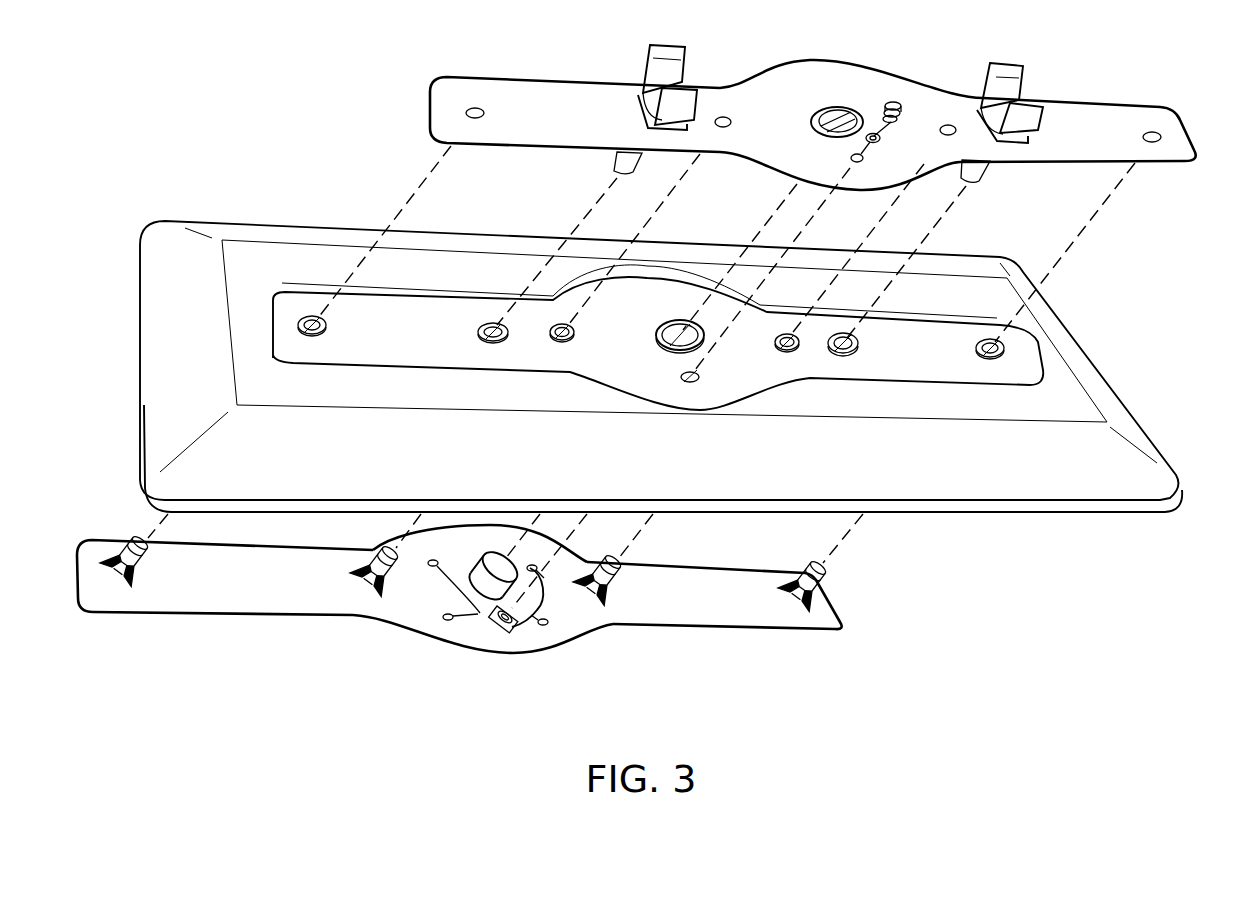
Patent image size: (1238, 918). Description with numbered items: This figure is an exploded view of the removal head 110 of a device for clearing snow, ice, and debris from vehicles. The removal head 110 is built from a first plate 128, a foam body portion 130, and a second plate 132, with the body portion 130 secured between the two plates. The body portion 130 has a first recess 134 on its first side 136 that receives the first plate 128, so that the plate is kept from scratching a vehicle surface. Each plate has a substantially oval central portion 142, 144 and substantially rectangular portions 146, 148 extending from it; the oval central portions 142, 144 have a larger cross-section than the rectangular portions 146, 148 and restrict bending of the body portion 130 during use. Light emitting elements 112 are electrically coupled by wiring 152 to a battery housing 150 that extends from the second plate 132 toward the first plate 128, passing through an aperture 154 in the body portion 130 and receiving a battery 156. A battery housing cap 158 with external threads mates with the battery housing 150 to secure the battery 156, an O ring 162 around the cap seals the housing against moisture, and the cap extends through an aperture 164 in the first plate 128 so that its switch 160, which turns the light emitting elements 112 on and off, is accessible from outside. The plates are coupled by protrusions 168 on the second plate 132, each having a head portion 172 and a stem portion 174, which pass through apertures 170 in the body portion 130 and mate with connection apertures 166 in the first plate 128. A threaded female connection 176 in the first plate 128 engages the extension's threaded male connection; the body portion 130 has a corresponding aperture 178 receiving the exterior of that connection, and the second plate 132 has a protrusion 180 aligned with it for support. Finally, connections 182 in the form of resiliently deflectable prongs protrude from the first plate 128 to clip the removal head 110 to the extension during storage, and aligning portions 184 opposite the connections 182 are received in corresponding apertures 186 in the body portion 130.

The removal head 110 is at (1237, 349).
The light emitting elements 112 is at (433, 568).
The first plate 128 is at (555, 95).
The body portion 130 is at (140, 320).
The second plate 132 is at (188, 597).
The first recess 134 is at (296, 308).
The first side 136 is at (253, 373).
The substantially oval central portion 142 is at (765, 62).
The substantially oval central portion 144 is at (547, 655).
The substantially rectangular portions 146 is at (497, 77).
The substantially rectangular portions 148 is at (250, 615).
The battery housing 150 is at (503, 628).
The wiring 152 is at (541, 598).
The aperture 154 is at (702, 377).
The battery 156 is at (878, 143).
The battery housing cap 158 is at (889, 102).
The switch 160 is at (902, 109).
The O ring 162 is at (899, 118).
The aperture 164 is at (850, 158).
The connection apertures 166 is at (1155, 132).
The protrusions 168 is at (370, 590).
The apertures 170 is at (1000, 350).
The head portion 172 is at (830, 566).
The stem portion 174 is at (815, 585).
The threaded female connection 176 is at (838, 116).
The aperture 178 is at (677, 330).
The protrusion 180 is at (483, 594).
The connections 182 is at (1008, 70).
The aligning portions 184 is at (978, 168).
The apertures 186 is at (852, 345).